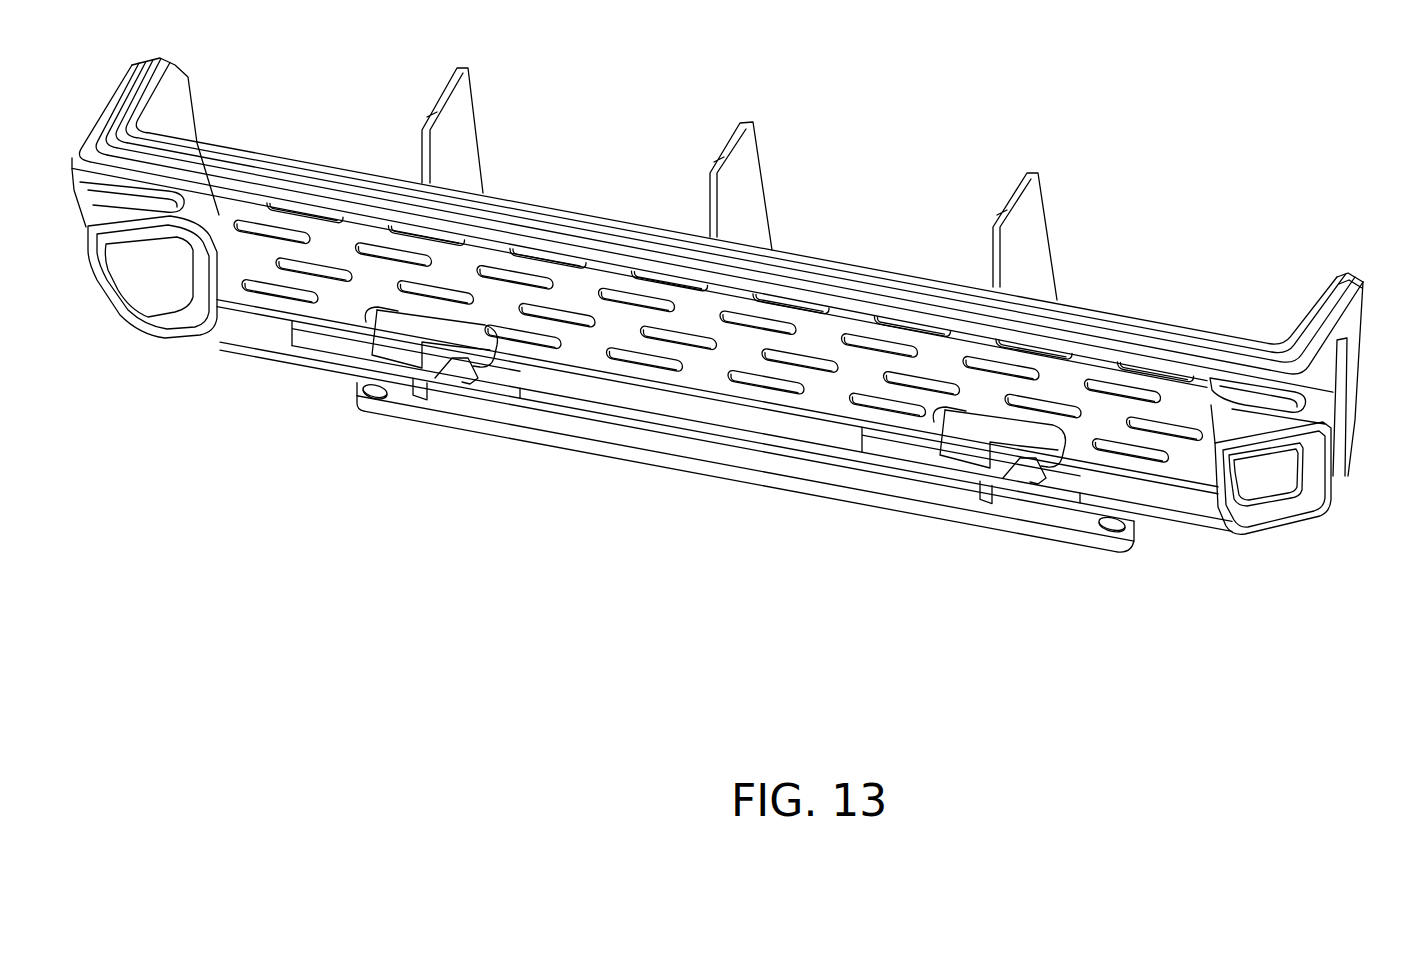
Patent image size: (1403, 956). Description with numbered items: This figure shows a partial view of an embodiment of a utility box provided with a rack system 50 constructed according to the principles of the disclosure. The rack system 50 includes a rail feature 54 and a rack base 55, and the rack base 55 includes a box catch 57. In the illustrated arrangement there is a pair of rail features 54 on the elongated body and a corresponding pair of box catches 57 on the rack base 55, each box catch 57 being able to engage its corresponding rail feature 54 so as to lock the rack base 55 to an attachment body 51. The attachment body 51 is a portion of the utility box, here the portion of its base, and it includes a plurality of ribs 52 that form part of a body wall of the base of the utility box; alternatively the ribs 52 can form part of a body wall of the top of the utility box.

The rack system 50 is at (1199, 140).
The attachment body 51 is at (717, 344).
The ribs 52 is at (467, 144).
The rail feature 54 is at (726, 428).
The rack base 55 is at (677, 452).
The box catch 57 is at (463, 338).